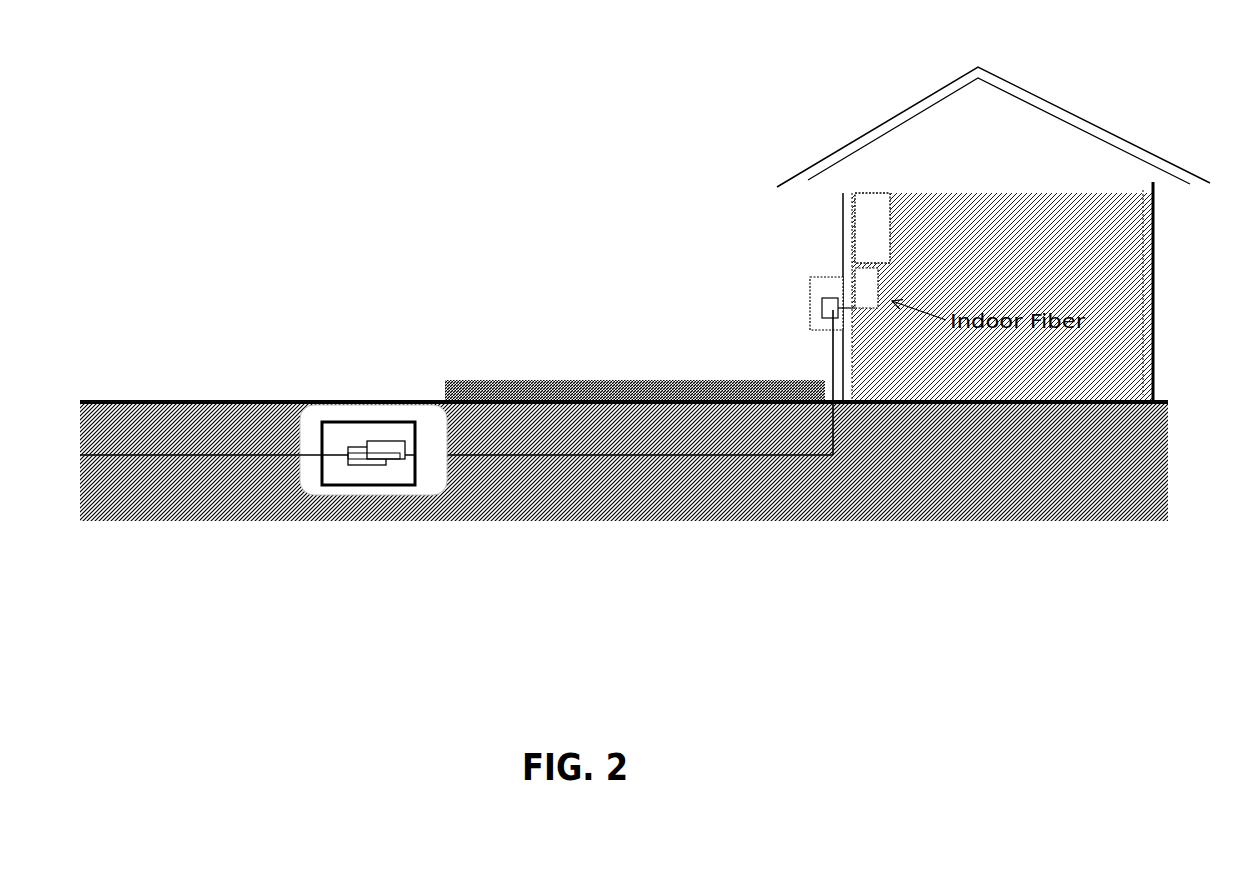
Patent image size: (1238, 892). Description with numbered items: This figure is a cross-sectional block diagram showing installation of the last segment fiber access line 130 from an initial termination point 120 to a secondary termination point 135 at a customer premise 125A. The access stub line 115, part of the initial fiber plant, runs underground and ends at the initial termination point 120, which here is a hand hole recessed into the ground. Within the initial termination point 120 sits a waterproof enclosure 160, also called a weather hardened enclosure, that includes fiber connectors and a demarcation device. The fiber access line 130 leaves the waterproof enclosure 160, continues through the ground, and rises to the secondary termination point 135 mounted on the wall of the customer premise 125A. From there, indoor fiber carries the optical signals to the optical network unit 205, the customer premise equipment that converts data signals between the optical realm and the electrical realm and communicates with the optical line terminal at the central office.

The access stub line 115 is at (162, 466).
The initial termination point 120 is at (440, 532).
The customer premise 125A is at (998, 168).
The fiber access line 130 is at (675, 466).
The secondary termination point 135 is at (798, 330).
The waterproof enclosure 160 is at (400, 420).
The optical network unit 205 is at (870, 194).